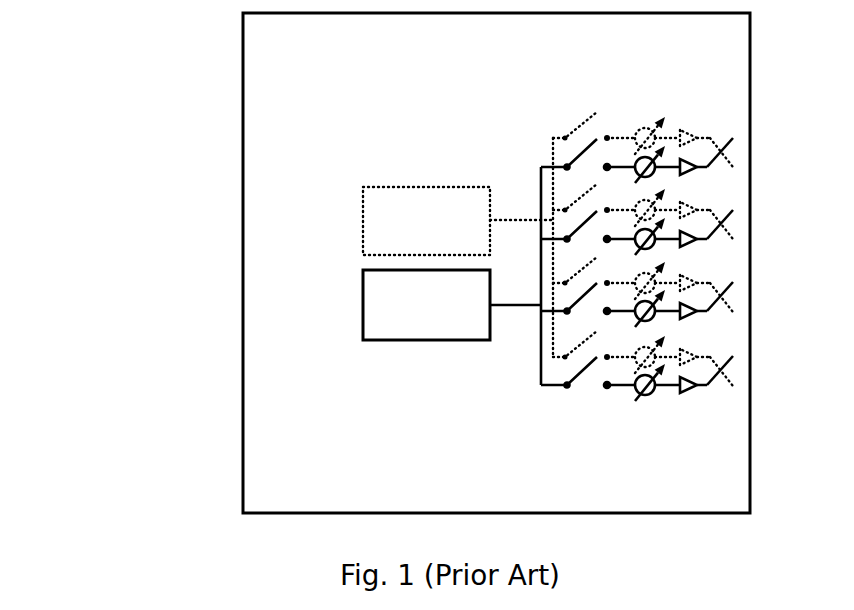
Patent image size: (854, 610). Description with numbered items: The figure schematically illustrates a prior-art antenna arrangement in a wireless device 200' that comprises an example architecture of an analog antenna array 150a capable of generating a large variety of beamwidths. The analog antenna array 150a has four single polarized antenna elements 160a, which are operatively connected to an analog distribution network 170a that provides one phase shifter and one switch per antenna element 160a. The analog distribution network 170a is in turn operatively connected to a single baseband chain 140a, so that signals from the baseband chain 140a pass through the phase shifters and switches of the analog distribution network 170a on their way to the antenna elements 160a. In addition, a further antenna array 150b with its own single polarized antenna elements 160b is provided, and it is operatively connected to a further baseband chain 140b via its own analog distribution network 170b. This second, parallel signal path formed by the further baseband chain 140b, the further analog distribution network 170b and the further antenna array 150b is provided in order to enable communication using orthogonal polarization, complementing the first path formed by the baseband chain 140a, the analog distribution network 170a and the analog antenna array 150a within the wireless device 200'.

The wireless device 200' is at (400, 263).
The baseband chain 140a is at (380, 330).
The further baseband chain 140b is at (393, 203).
The analog distribution network 170a is at (542, 387).
The further analog distribution network 170b is at (562, 137).
The analog antenna array 150a is at (686, 416).
The further antenna array 150b is at (670, 96).
The single polarized antenna elements 160a is at (733, 138).
The single polarized antenna elements 160b is at (729, 388).